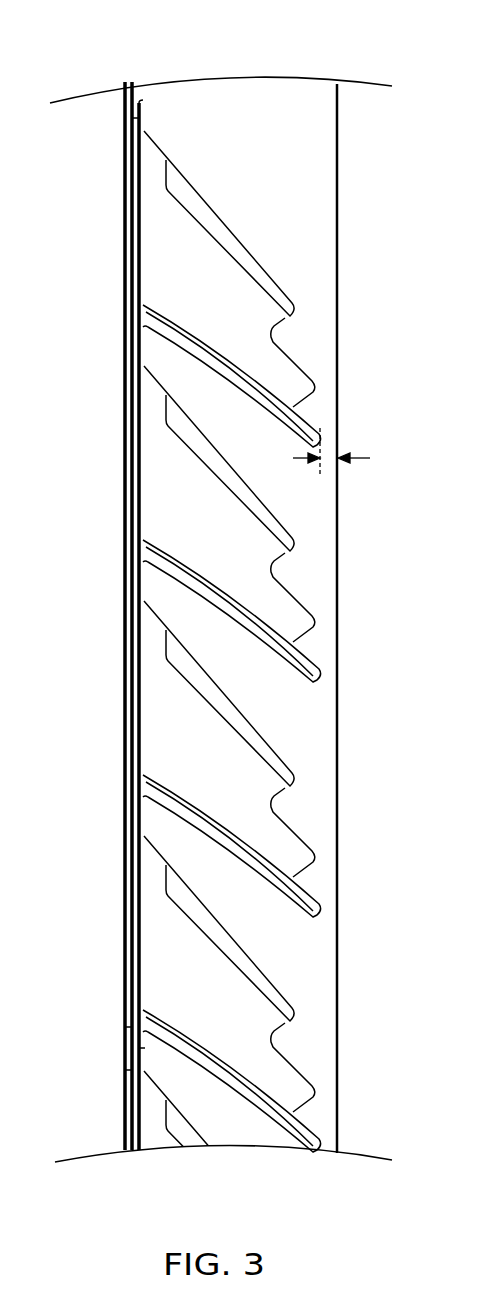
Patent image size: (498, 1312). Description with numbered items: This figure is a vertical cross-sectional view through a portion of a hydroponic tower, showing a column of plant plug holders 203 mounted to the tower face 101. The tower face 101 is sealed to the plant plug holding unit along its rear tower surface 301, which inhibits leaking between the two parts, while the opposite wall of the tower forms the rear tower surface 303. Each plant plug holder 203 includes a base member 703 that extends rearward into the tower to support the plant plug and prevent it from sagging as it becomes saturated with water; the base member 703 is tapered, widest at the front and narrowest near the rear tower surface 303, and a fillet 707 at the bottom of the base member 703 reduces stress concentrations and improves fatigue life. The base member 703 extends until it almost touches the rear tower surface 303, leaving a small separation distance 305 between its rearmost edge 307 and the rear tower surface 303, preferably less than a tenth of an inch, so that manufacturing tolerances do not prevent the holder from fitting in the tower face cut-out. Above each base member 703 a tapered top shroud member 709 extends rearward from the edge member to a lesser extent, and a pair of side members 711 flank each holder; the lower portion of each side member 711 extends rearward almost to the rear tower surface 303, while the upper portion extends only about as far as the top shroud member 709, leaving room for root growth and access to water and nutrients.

The tower face 101 is at (127, 82).
The rear tower surface 301 is at (150, 90).
The rear tower surface 303 is at (324, 225).
The plant plug holder 203 is at (183, 721).
The base member 703 is at (250, 398).
The fillet 707 is at (153, 579).
The top shroud member 709 is at (253, 730).
The side members 711 is at (228, 300).
The rearmost edge 307 is at (333, 436).
The separation distance 305 is at (352, 451).